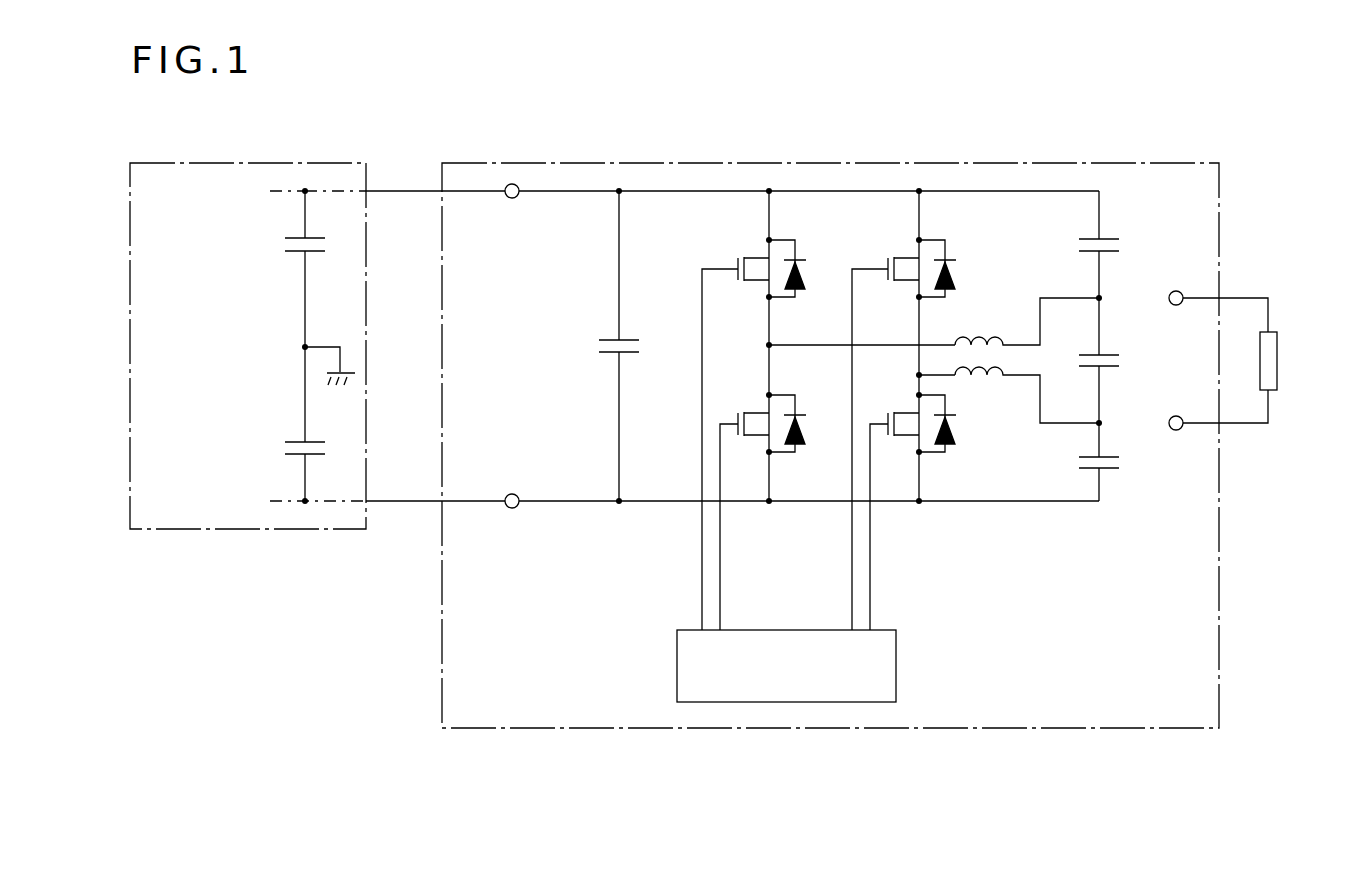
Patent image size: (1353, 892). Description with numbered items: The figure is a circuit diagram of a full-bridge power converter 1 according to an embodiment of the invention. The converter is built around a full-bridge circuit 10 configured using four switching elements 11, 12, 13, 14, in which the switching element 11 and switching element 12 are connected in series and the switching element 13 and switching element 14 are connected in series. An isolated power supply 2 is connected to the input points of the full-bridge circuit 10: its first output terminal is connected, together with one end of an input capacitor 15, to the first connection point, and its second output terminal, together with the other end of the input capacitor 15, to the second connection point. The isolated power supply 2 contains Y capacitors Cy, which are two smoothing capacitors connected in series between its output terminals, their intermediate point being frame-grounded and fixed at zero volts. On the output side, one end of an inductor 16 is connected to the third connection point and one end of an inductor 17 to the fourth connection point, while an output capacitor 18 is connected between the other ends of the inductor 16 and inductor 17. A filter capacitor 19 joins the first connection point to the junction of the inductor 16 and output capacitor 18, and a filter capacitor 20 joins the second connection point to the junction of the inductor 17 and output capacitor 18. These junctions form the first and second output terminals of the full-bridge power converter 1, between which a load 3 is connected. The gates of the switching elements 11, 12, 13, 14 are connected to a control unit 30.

The full-bridge power converter 1 is at (1027, 162).
The isolated power supply 2 is at (258, 163).
The load 3 is at (1278, 361).
The full-bridge circuit 10 is at (839, 180).
The switching element 11 is at (741, 254).
The switching element 12 is at (741, 409).
The switching element 13 is at (891, 254).
The switching element 14 is at (891, 409).
The input capacitor 15 is at (597, 345).
The inductor 16 is at (983, 333).
The inductor 17 is at (982, 380).
The output capacitor 18 is at (1099, 347).
The filter capacitor 19 is at (1099, 222).
The filter capacitor 20 is at (1100, 483).
The control unit 30 is at (898, 667).
The Y capacitors Cy is at (275, 374).